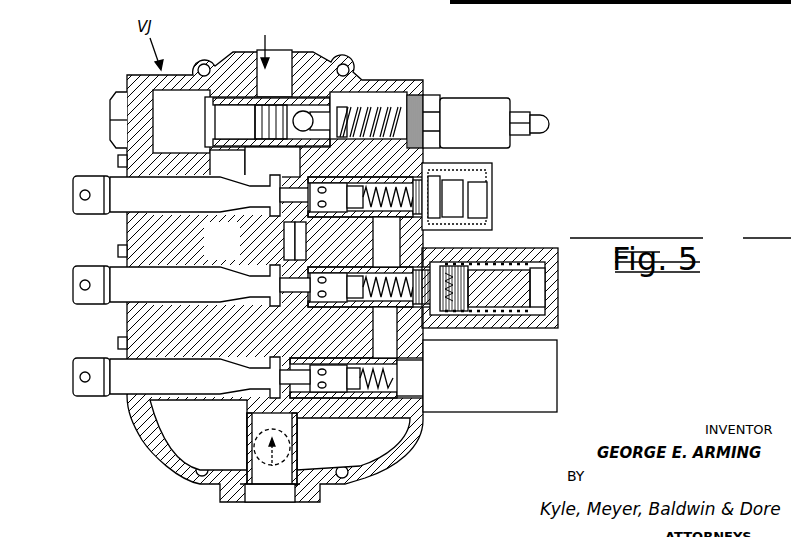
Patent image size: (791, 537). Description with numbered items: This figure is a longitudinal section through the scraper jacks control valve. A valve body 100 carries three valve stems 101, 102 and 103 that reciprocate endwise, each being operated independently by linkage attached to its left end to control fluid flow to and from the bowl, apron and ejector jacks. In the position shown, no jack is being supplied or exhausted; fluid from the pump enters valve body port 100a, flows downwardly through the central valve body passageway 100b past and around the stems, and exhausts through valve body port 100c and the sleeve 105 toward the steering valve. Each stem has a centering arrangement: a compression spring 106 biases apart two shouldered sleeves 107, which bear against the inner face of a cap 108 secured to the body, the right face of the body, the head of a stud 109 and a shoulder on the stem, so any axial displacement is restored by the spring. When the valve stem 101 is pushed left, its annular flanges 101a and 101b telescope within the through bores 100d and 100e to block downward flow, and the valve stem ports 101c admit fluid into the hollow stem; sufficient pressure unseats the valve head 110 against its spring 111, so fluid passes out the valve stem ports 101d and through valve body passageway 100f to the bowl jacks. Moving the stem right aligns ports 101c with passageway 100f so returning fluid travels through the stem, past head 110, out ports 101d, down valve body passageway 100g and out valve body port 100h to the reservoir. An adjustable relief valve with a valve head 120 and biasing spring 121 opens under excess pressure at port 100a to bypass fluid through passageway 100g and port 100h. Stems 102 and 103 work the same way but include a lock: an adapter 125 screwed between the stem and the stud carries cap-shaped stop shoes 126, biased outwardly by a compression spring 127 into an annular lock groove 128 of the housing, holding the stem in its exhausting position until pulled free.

The valve body 100 is at (393, 453).
The valve body port 100a is at (281, 62).
The valve body passageway 100b is at (243, 147).
The valve body port 100c is at (278, 496).
The through bore 100d is at (206, 152).
The through bore 100e is at (303, 133).
The valve body passageway 100f is at (350, 128).
The valve body passageway 100g is at (393, 341).
The valve body port 100h is at (272, 449).
The valve stem 101 is at (92, 214).
The annular valve stem flange 101a is at (270, 196).
The annular valve stem flange 101b is at (310, 150).
The valve stem ports 101c is at (294, 226).
The valve stem ports 101d is at (303, 225).
The valve stem 102 is at (94, 305).
The valve stem 103 is at (94, 397).
The sleeve 105 is at (300, 444).
The compression spring 106 is at (473, 170).
The sleeves 107 is at (437, 172).
The cap 108 is at (492, 200).
The stud 109 is at (525, 328).
The valve head 110 is at (355, 205).
The spring 111 is at (387, 218).
The valve head 120 is at (350, 92).
The biasing spring 121 is at (378, 97).
The adapter 125 is at (478, 318).
The stop shoes 126 is at (470, 276).
The compression spring 127 is at (452, 262).
The annular lock groove 128 is at (471, 262).